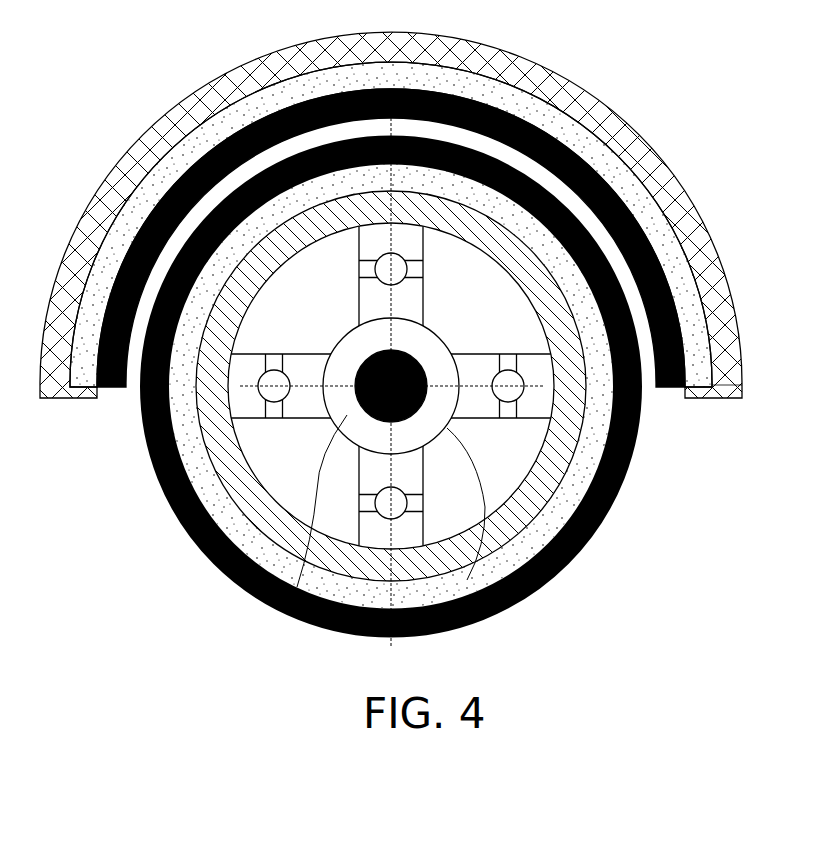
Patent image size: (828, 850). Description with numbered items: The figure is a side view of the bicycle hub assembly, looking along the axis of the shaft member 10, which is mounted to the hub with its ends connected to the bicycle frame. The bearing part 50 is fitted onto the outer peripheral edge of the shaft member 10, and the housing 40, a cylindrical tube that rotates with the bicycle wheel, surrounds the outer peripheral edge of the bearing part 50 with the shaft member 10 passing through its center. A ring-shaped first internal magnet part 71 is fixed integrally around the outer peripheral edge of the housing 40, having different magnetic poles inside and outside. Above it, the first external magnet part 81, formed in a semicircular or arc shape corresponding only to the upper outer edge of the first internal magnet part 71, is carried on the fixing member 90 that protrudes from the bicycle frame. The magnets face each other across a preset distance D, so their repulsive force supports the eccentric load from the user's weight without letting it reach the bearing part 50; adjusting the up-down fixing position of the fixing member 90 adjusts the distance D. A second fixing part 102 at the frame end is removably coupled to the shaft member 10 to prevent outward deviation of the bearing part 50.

The shaft member 10 is at (414, 385).
The second fixing part 102 is at (492, 615).
The bearing part 50 is at (622, 493).
The housing 40 is at (425, 215).
The fixing member 90 is at (651, 147).
The first external magnet part 81 is at (684, 248).
The first internal magnet part 71 is at (684, 268).
The preset distance D is at (700, 312).